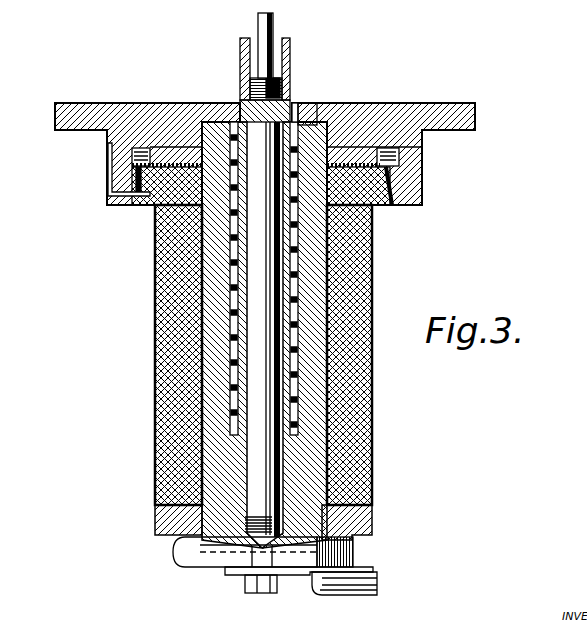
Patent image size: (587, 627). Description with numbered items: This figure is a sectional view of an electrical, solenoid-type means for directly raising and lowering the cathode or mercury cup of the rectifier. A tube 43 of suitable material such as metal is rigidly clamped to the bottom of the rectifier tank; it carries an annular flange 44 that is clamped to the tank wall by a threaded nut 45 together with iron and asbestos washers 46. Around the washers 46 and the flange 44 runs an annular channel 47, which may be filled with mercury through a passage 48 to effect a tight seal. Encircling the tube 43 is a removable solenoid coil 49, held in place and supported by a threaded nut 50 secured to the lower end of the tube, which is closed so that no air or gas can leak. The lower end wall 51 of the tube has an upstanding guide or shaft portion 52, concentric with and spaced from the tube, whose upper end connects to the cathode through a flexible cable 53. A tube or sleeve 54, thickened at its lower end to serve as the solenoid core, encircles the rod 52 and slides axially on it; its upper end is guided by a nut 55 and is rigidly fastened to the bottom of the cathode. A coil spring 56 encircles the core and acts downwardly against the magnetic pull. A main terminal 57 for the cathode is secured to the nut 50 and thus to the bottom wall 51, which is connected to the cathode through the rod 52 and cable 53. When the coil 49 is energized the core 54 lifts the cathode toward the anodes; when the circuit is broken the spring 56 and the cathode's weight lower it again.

The tube 43 is at (318, 272).
The annular flange 44 is at (358, 147).
The threaded nut 45 is at (387, 205).
The iron and asbestos washers 46 is at (165, 160).
The annular channel 47 is at (405, 122).
The passage 48 is at (108, 172).
The solenoid coil 49 is at (373, 421).
The threaded nut 50 is at (370, 530).
The lower end wall 51 is at (205, 545).
The guide or shaft portion 52 is at (276, 364).
The flexible cable 53 is at (273, 17).
The tube or sleeve 54 is at (290, 47).
The nut 55 is at (306, 116).
The coil spring 56 is at (300, 328).
The main terminal 57 is at (378, 588).